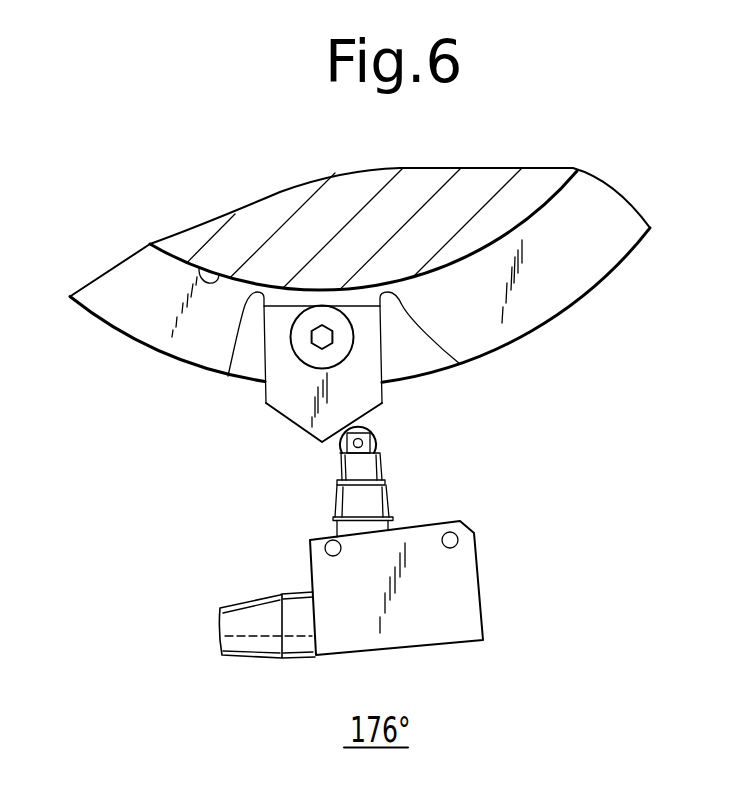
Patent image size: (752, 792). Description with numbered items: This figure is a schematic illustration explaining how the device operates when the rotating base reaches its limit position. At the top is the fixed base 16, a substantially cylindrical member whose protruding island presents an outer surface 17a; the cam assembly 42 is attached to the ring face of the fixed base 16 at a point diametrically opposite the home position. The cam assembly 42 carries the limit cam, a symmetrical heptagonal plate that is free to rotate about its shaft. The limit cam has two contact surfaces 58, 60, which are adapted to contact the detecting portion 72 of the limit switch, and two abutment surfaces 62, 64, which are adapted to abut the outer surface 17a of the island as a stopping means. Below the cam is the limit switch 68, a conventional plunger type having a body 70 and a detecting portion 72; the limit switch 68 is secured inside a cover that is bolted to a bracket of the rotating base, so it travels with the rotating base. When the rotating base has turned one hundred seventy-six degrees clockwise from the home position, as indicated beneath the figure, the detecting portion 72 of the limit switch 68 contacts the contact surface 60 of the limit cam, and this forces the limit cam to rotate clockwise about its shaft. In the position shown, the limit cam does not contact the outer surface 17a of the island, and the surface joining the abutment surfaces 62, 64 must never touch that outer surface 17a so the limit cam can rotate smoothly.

The fixed base 16 is at (628, 300).
The outer surface of island 17a is at (203, 272).
The cam assembly 42 is at (148, 428).
The contact surface 58 is at (293, 421).
The contact surface 60 is at (378, 414).
The abutment surface 62 is at (224, 381).
The abutment surface 64 is at (478, 383).
The limit switch 68 is at (157, 685).
The body 70 is at (532, 580).
The detecting portion 72 is at (424, 445).